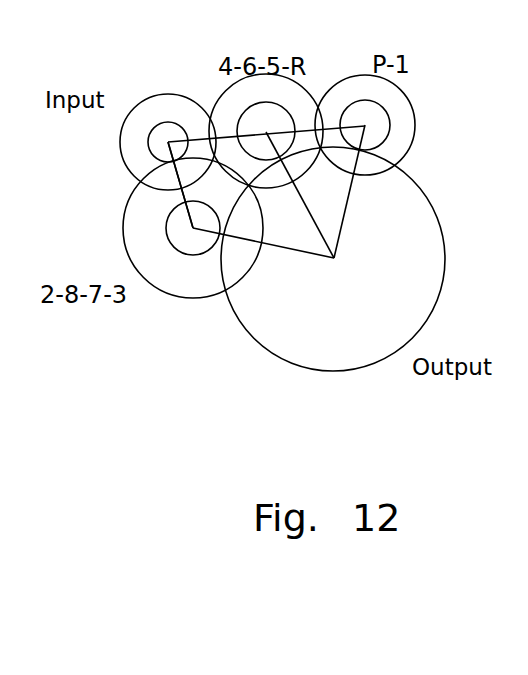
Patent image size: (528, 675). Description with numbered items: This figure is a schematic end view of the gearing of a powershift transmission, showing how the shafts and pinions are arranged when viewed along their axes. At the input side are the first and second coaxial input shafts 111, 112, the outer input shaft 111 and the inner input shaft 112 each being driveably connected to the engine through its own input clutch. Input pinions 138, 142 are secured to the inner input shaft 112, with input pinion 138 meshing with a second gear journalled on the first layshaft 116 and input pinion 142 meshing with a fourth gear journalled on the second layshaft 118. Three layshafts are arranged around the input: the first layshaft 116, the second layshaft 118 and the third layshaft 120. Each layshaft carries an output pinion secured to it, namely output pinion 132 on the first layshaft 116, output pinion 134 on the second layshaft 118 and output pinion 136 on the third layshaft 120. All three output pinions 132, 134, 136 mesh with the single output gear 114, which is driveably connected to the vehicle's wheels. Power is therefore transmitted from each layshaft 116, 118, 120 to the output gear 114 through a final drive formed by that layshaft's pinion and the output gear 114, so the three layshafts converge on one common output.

The input pinion 142 is at (158, 95).
The input pinion 138 is at (149, 135).
The outer input shaft 111 is at (97, 183).
The inner input shaft 112 is at (168, 142).
The output pinion 134 is at (243, 111).
The second layshaft 118 is at (313, 97).
The third layshaft 120 is at (365, 125).
The output pinion 136 is at (390, 129).
The output pinion 132 is at (166, 228).
The first layshaft 116 is at (193, 228).
The output gear 114 is at (333, 288).